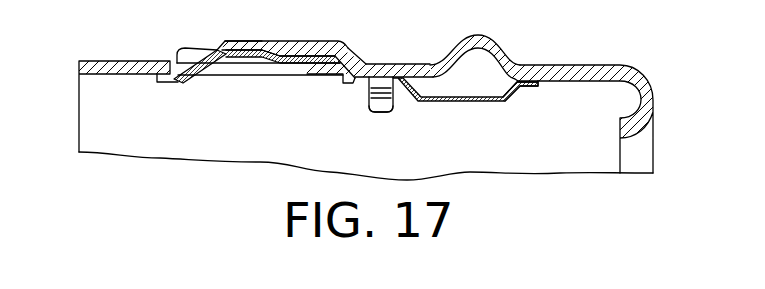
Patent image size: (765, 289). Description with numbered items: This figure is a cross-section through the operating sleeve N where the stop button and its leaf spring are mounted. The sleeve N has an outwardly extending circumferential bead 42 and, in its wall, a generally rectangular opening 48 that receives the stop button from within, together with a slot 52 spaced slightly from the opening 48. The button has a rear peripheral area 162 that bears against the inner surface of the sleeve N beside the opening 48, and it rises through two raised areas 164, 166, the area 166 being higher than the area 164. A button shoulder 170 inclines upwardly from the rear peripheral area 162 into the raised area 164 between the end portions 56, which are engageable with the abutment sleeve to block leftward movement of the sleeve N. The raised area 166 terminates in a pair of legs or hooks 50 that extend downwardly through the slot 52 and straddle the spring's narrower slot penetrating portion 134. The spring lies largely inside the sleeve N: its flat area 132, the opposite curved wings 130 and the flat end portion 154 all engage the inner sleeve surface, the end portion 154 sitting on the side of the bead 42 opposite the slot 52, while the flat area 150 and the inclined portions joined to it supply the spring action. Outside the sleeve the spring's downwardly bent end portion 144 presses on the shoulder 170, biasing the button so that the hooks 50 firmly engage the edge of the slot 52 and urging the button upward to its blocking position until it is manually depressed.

The circumferential bead 42 is at (491, 43).
The rectangular opening 48 is at (255, 67).
The button legs or hooks 50 is at (347, 81).
The slot 52 is at (390, 66).
The button end portions 56 is at (183, 52).
The wings 130 is at (377, 106).
The flat area 132 is at (394, 96).
The slot penetrating portion 134 is at (358, 63).
The downwardly bent end portion 144 is at (203, 64).
The flat area 150 is at (448, 101).
The flat end portion 154 is at (532, 88).
The rear peripheral area 162 is at (167, 82).
The raised area 164 is at (207, 51).
The raised area 166 is at (277, 40).
The button shoulder 170 is at (247, 39).
The operating sleeve N is at (551, 64).